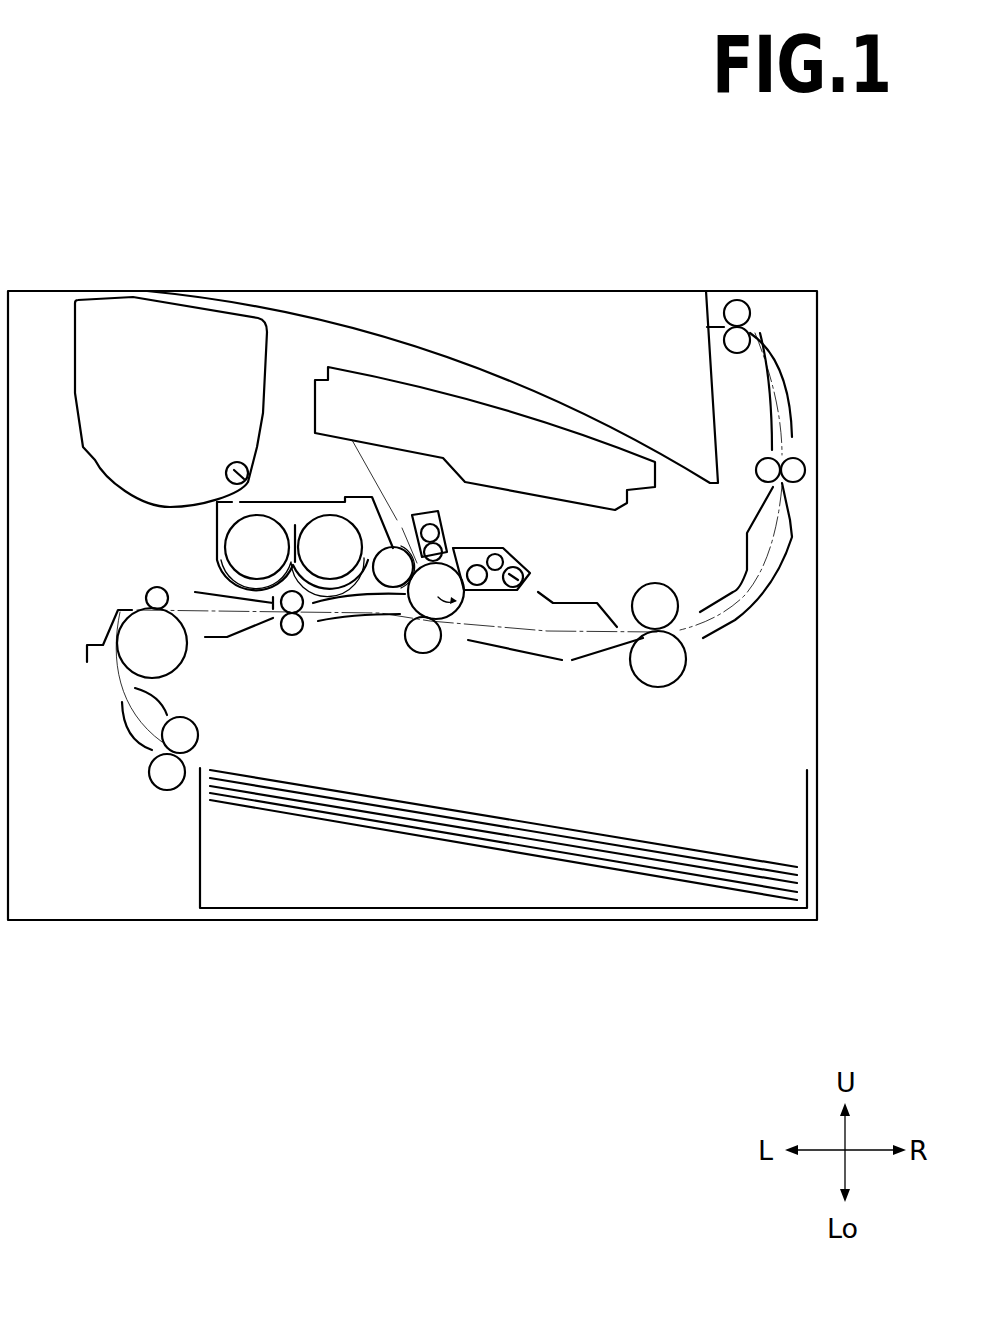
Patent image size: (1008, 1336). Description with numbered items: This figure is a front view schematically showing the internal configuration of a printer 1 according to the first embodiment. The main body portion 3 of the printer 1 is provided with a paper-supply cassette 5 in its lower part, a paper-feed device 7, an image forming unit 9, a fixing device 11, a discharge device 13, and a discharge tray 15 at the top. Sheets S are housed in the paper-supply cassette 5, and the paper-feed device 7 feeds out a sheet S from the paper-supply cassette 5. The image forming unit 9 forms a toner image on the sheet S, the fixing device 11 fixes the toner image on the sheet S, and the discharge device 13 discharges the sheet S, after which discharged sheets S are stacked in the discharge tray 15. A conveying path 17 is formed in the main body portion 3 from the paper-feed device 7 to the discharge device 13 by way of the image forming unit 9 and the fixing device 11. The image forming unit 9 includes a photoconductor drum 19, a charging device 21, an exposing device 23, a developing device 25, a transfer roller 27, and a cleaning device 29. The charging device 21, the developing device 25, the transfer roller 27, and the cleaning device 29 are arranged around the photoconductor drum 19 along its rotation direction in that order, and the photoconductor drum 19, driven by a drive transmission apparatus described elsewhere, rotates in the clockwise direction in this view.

The printer 1 is at (95, 120).
The main body portion 3 is at (818, 347).
The paper-supply cassette 5 is at (808, 808).
The paper-feed device 7 is at (148, 768).
The image forming unit 9 is at (467, 655).
The fixing device 11 is at (663, 582).
The discharge device 13 is at (737, 300).
The discharge tray 15 is at (538, 390).
The conveying path 17 is at (587, 632).
The photoconductor drum 19 is at (465, 603).
The charging device 21 is at (423, 510).
The exposing device 23 is at (323, 437).
The developing device 25 is at (217, 540).
The transfer roller 27 is at (405, 638).
The cleaning device 29 is at (530, 567).
The sheet S is at (502, 817).